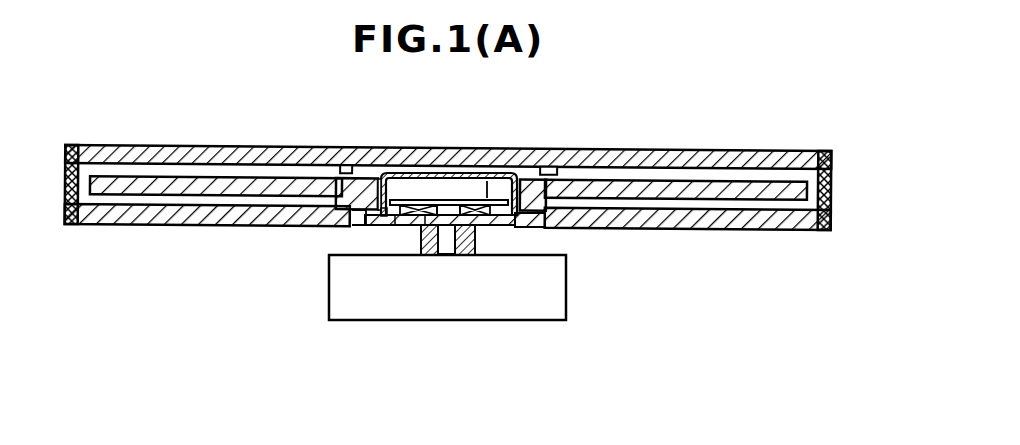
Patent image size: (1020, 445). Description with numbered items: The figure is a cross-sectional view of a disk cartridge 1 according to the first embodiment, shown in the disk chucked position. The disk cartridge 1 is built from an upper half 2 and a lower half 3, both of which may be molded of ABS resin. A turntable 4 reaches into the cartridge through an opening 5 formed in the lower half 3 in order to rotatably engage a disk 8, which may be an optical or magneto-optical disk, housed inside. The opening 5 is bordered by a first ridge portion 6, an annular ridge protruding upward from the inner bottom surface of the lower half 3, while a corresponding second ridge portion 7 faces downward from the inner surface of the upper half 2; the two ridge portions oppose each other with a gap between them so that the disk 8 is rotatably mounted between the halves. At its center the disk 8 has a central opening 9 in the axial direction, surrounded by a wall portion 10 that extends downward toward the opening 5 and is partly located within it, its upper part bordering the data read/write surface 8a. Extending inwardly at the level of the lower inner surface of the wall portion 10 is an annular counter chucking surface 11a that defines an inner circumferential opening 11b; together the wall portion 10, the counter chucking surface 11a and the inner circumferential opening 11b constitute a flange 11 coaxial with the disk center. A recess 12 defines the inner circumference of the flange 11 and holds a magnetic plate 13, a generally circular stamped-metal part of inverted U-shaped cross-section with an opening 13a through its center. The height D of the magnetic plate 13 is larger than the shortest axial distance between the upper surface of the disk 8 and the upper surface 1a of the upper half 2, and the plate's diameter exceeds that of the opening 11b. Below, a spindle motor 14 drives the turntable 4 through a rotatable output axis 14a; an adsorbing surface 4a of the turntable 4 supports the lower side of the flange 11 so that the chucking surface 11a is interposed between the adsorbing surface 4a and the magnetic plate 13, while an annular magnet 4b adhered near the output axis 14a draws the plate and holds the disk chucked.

The disk cartridge 1 is at (836, 163).
The upper surface of the upper half 1a is at (487, 181).
The upper half 2 is at (777, 151).
The lower half 3 is at (792, 230).
The turntable 4 is at (503, 226).
The adsorbing surface 4a is at (366, 228).
The magnet 4b is at (423, 219).
The opening 5 is at (357, 222).
The first ridge portion 6 is at (355, 179).
The second ridge portion 7 is at (346, 168).
The disk 8 is at (682, 181).
The data read/write surface 8a is at (181, 197).
The central opening 9 is at (377, 178).
The wall portion 10 is at (533, 227).
The flange 11 is at (522, 220).
The counter chucking surface 11a is at (536, 178).
The inner circumferential opening 11b is at (400, 223).
The recess 12 is at (417, 185).
The magnetic plate 13 is at (401, 182).
The opening of the magnetic plate 13a is at (455, 182).
The spindle motor 14 is at (547, 310).
The output axis 14a is at (447, 256).
The height of the magnetic plate D is at (490, 226).